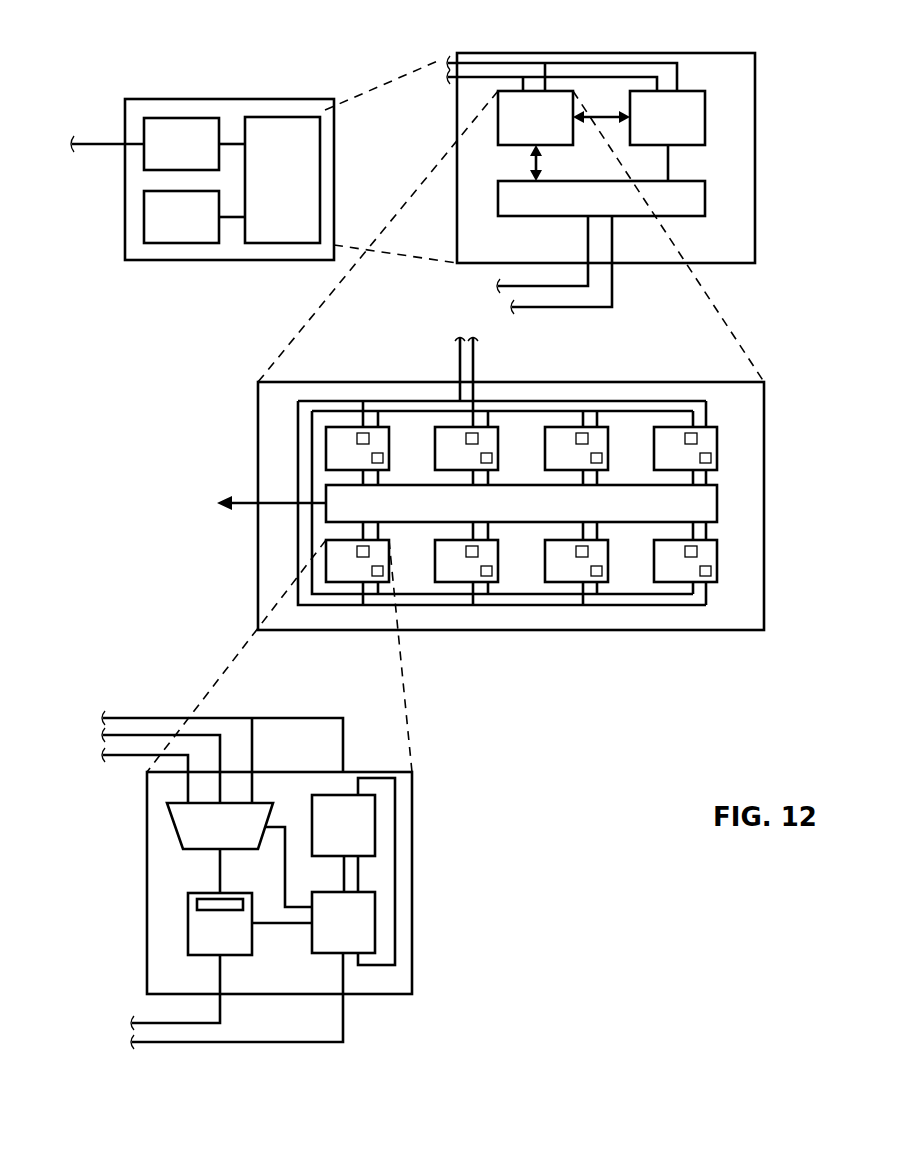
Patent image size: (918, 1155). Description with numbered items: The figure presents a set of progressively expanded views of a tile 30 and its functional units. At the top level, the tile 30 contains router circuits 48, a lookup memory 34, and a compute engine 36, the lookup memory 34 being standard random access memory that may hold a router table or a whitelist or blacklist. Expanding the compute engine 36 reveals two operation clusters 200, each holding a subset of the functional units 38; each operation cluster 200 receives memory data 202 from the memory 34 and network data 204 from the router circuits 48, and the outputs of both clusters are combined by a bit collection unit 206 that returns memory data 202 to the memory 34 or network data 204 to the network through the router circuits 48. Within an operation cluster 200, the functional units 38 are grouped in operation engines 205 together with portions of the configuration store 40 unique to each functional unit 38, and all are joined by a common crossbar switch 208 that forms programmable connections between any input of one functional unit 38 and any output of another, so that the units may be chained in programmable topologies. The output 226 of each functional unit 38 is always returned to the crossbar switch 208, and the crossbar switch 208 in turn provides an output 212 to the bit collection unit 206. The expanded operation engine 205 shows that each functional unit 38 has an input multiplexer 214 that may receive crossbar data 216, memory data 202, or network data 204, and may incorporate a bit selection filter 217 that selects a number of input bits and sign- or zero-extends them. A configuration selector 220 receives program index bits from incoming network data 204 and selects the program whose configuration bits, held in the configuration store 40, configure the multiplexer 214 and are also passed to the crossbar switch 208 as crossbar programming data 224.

The tile 30 is at (315, 98).
The router circuits 48 is at (167, 157).
The lookup memory 34 is at (167, 230).
The compute engine 36 is at (268, 193).
The operation cluster 200 is at (514, 130).
The memory data 202 is at (497, 62).
The network data 204 is at (472, 80).
The bit collection unit 206 is at (580, 211).
The output 212 is at (667, 160).
The operation engine 205 is at (443, 455).
The functional unit 38 is at (590, 437).
The configuration store 40 is at (711, 455).
The crossbar switch 208 is at (717, 503).
The output 226 is at (582, 477).
The crossbar programming data 224 is at (596, 477).
The crossbar data 216 is at (123, 758).
The input multiplexer 214 is at (202, 832).
The bit selection filter 217 is at (203, 898).
The configuration selector 220 is at (375, 822).